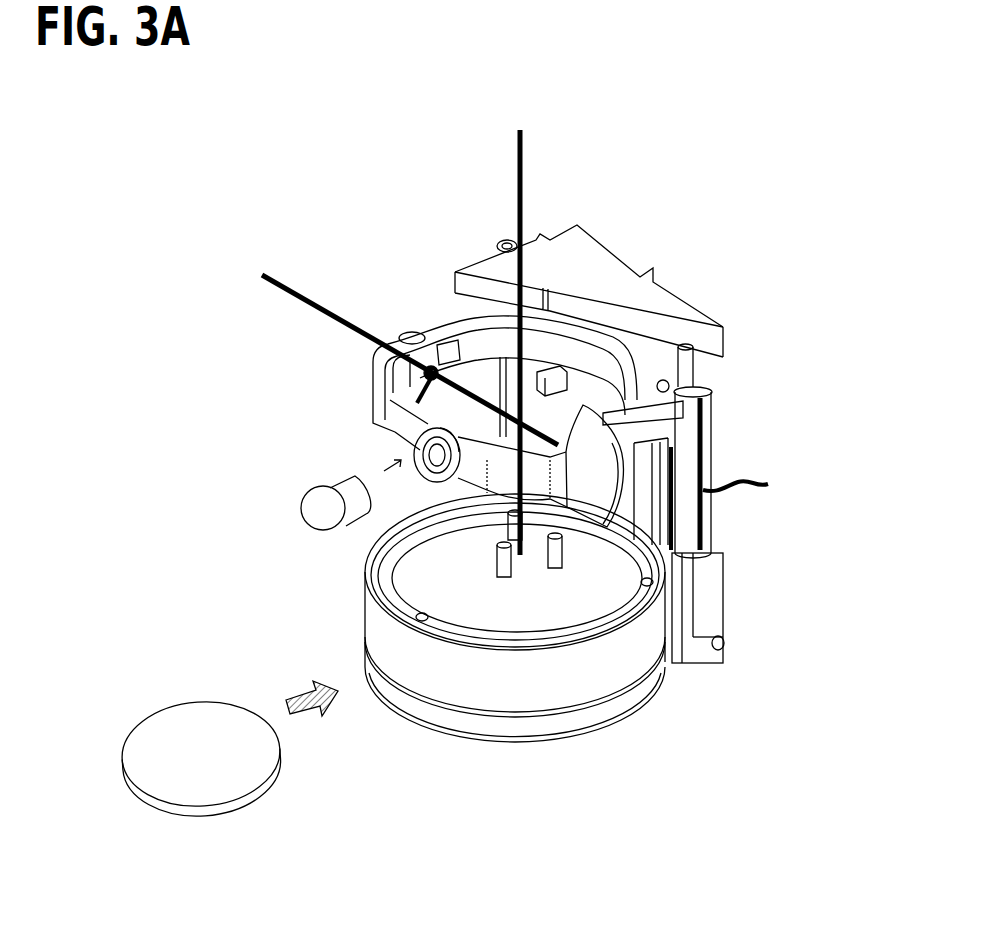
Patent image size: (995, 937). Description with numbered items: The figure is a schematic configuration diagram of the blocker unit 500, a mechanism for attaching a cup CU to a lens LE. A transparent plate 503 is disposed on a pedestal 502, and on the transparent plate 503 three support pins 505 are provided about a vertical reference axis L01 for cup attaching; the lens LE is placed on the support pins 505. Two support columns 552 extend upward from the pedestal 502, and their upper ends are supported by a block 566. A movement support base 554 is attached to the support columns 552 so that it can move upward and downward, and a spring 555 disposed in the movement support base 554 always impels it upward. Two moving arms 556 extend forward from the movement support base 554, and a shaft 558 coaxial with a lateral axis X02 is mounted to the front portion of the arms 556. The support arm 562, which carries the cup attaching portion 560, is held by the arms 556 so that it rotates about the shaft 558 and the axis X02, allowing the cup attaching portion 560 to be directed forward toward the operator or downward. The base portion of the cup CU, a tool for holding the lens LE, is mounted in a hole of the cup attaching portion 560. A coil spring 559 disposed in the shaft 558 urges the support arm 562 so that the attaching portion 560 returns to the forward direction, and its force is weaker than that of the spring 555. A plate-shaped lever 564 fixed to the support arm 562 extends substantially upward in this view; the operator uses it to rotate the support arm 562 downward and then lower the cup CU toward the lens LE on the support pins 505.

The blocker unit 500 is at (521, 370).
The pedestal 502 is at (457, 688).
The transparent plate 503 is at (417, 593).
The support pins 505 is at (508, 533).
The support columns 552 is at (502, 382).
The movement support base 554 is at (703, 457).
The spring 555 is at (760, 483).
The moving arms 556 is at (428, 338).
The shaft 558 is at (443, 340).
The coil spring 559 is at (428, 372).
The cup attaching portion 560 is at (418, 458).
The support arm 562 is at (377, 403).
The lever 564 is at (703, 543).
The block 566 is at (675, 313).
The reference axis L01 is at (532, 165).
The axis X02 is at (385, 346).
The cup CU is at (310, 510).
The lens LE is at (155, 737).